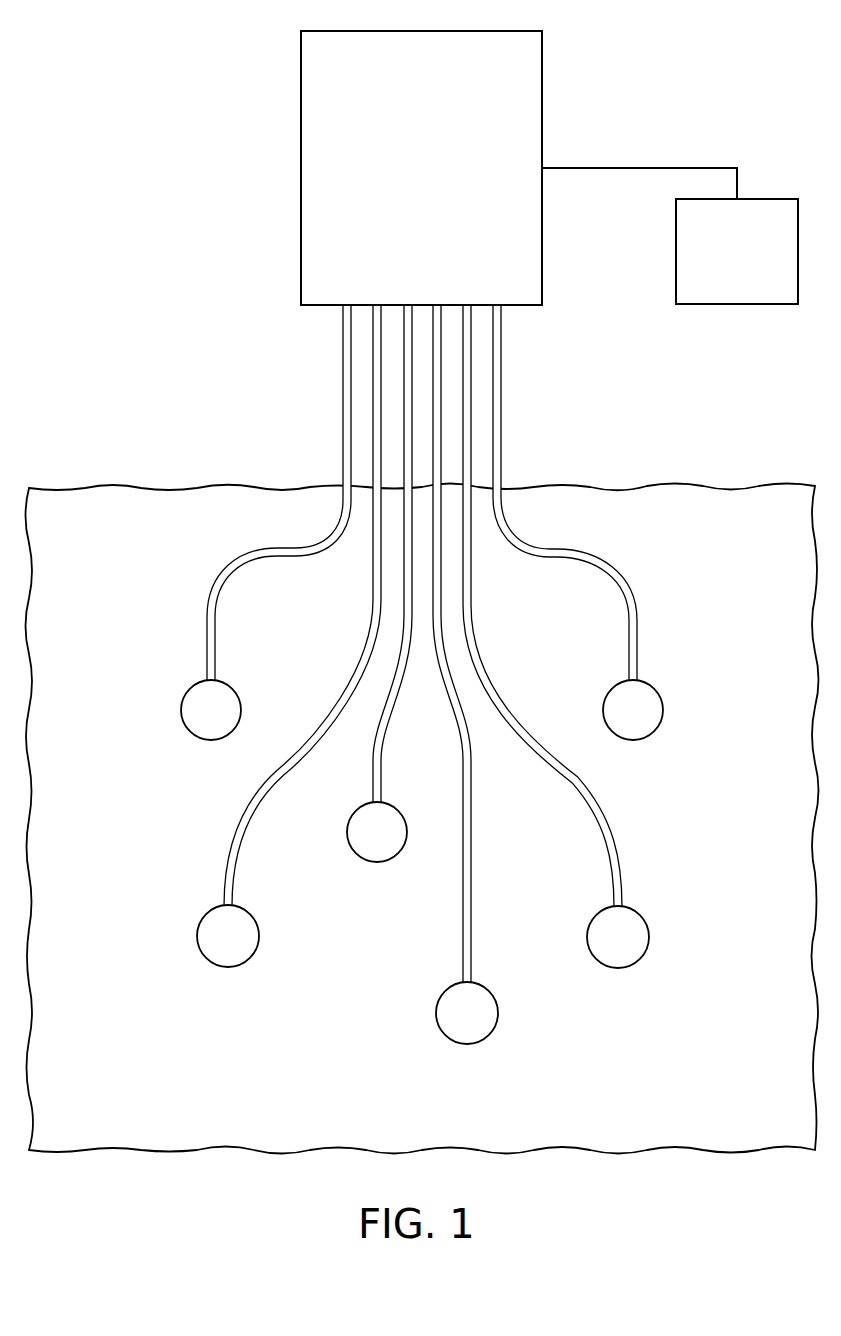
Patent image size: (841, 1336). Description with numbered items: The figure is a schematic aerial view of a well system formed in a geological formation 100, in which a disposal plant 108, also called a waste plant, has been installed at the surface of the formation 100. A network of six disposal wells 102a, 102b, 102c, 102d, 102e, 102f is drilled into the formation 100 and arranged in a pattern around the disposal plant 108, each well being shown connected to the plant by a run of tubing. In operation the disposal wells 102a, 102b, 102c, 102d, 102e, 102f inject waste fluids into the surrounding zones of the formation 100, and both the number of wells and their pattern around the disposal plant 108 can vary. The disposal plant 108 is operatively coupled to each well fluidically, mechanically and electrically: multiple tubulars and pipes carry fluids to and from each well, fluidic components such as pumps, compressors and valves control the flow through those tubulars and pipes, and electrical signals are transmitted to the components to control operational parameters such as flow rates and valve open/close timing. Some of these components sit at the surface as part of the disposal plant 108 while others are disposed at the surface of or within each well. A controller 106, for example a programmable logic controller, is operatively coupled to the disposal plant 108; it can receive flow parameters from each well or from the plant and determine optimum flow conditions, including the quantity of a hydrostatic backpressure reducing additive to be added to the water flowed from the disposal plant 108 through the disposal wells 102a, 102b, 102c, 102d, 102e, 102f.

The geological formation 100 is at (157, 476).
The disposal well 102a is at (455, 1040).
The disposal well 102b is at (647, 931).
The disposal well 102c is at (200, 926).
The disposal well 102d is at (188, 691).
The disposal well 102e is at (660, 703).
The disposal well 102f is at (366, 858).
The controller 106 is at (737, 251).
The disposal plant 108 is at (421, 168).